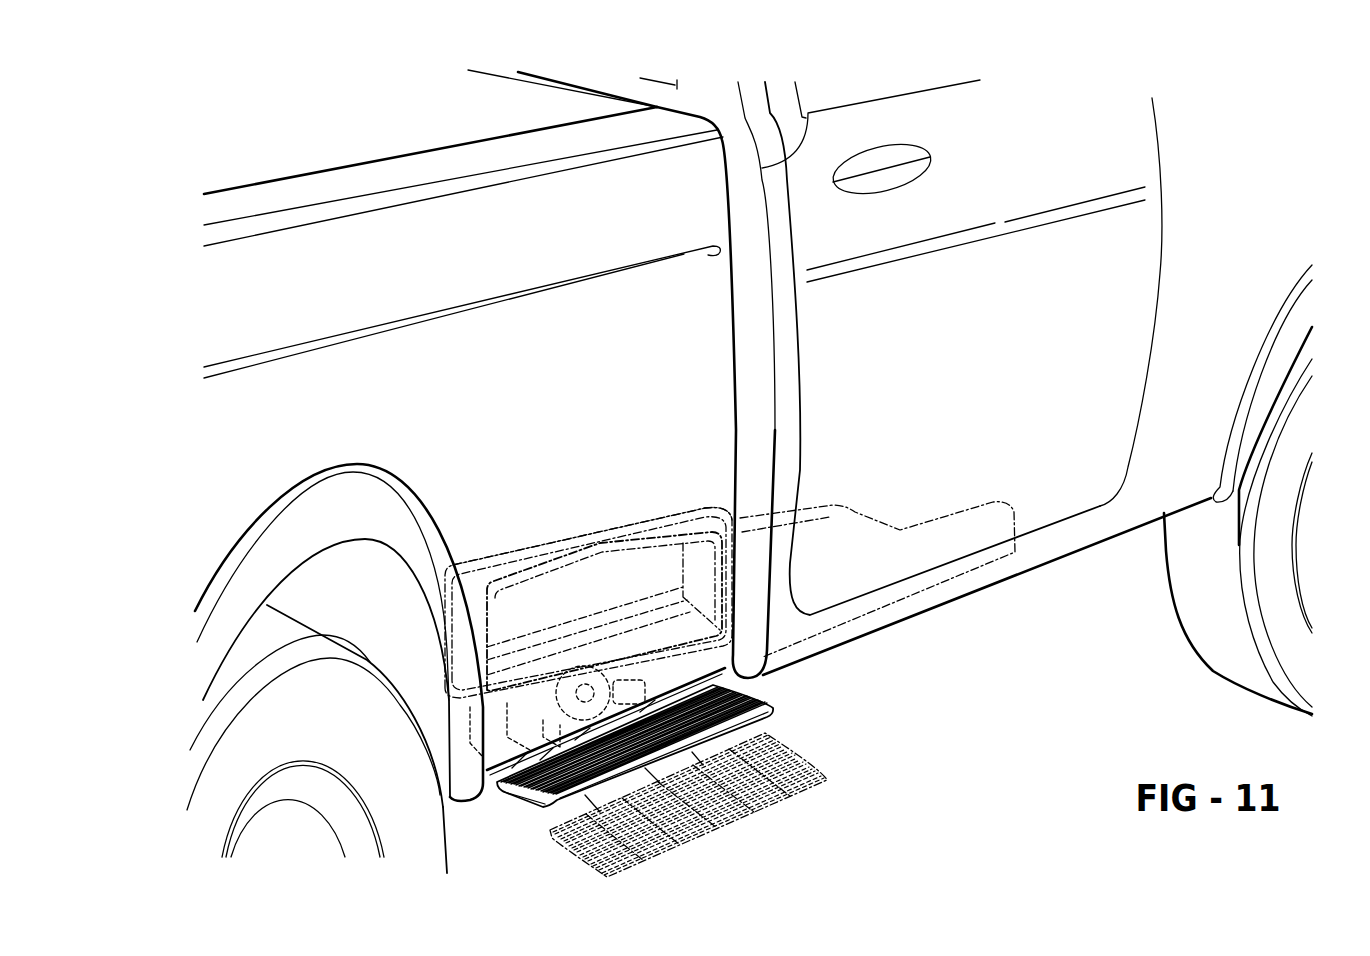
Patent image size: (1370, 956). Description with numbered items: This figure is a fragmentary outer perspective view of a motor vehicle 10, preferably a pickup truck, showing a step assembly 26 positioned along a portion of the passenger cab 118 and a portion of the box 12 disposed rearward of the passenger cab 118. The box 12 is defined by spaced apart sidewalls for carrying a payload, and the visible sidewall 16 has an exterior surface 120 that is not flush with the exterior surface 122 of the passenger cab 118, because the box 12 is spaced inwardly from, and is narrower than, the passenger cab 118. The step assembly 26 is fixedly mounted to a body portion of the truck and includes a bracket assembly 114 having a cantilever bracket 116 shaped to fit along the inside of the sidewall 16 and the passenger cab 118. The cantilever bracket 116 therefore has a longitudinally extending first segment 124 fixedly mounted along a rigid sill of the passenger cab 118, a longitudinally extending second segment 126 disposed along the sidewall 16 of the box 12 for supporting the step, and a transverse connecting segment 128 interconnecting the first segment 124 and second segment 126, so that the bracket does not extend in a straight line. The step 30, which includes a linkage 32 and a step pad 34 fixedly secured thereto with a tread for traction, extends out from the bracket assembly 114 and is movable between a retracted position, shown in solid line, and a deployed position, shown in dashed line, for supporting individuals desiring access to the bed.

The motor vehicle 10 is at (1037, 587).
The box 12 is at (547, 113).
The sidewall 16 is at (341, 180).
The step assembly 26 is at (593, 513).
The step 30 is at (498, 803).
The linkage 32 is at (446, 840).
The step pad 34 is at (773, 702).
The bracket assembly 114 is at (702, 500).
The cantilever bracket 116 is at (547, 533).
The passenger cab 118 is at (808, 113).
The exterior surface of the sidewall 120 is at (431, 277).
The exterior surface of the passenger cab 122 is at (945, 385).
The first segment 124 is at (973, 517).
The second segment 126 is at (490, 550).
The transverse connecting segment 128 is at (737, 518).